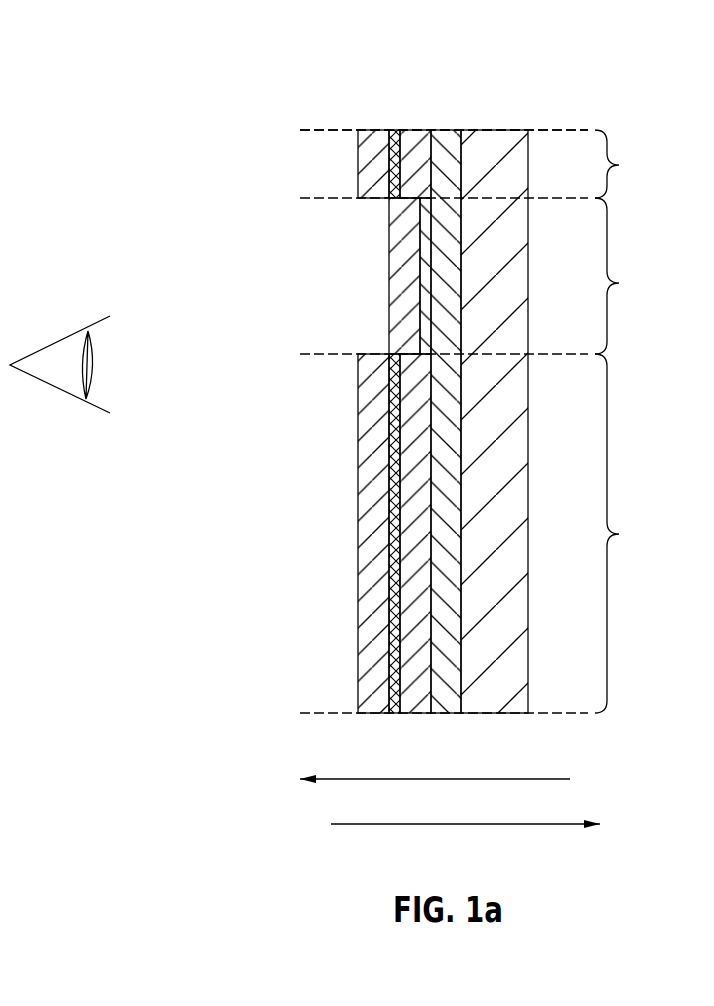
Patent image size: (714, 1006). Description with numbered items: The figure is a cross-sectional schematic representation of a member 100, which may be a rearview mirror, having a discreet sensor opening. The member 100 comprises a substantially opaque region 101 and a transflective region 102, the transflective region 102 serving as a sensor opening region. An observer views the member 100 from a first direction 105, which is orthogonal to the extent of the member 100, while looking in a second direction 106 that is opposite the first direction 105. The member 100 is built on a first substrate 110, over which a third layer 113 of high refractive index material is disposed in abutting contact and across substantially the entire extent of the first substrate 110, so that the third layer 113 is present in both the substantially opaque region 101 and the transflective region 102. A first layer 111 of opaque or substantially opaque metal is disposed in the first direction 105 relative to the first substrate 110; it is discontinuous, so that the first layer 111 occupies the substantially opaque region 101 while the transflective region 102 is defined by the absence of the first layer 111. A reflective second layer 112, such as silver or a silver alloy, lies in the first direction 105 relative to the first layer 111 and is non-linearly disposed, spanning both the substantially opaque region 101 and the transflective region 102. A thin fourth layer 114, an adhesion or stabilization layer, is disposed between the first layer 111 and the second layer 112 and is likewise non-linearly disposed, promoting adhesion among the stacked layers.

The member 100 is at (193, 85).
The substantially opaque region 101 is at (626, 421).
The transflective region 102 is at (626, 276).
The first direction 105 is at (454, 781).
The second direction 106 is at (446, 826).
The first substrate 110 is at (498, 142).
The first layer 111 is at (413, 140).
The second layer 112 is at (375, 147).
The third layer 113 is at (447, 140).
The fourth layer 114 is at (393, 146).